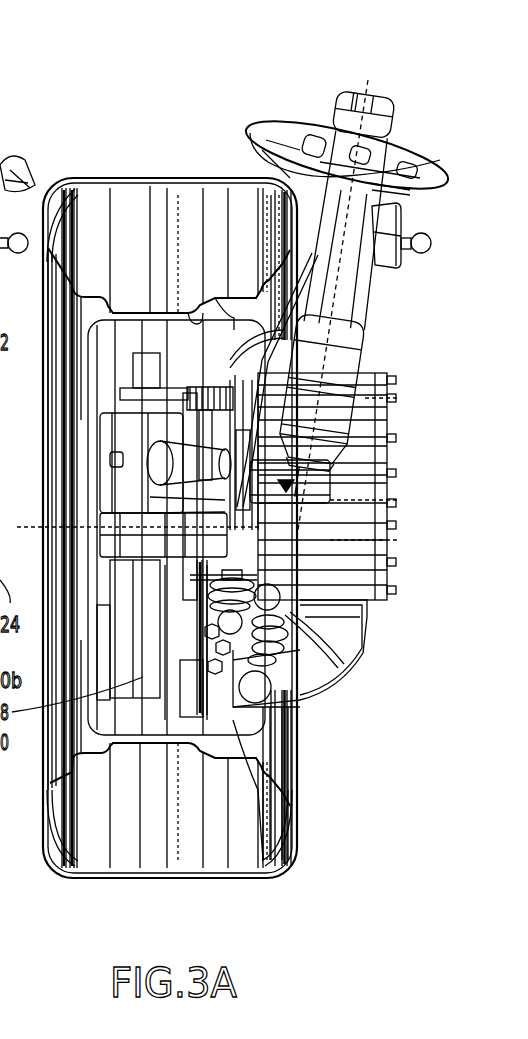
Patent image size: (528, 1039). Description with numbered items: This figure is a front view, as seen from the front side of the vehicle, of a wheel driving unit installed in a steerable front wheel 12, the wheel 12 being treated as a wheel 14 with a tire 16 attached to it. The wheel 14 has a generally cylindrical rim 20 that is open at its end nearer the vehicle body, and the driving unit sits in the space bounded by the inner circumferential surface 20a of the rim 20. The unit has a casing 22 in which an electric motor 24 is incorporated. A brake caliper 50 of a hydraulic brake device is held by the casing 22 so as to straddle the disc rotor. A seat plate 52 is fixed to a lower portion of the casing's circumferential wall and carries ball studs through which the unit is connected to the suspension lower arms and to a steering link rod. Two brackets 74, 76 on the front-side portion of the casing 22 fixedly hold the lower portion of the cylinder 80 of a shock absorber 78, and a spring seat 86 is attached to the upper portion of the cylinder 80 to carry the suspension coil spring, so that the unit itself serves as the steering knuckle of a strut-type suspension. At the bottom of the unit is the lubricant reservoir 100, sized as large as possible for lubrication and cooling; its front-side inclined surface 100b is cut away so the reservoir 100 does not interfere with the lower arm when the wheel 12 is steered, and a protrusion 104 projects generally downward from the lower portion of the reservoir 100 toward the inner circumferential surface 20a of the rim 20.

The wheel 12 is at (85, 128).
The wheel 14 is at (152, 282).
The tire 16 is at (60, 183).
The rim 20 is at (182, 307).
The inner circumferential surface 20a is at (204, 307).
The casing 22 is at (356, 402).
The electric motor 24 is at (360, 521).
The brake caliper 50 is at (90, 403).
The seat plate 52 is at (300, 638).
The bracket 74 is at (352, 334).
The bracket 76 is at (313, 472).
The shock absorber 78 is at (385, 228).
The cylinder 80 is at (348, 278).
The spring seat 86 is at (417, 162).
The lubricant reservoir 100 is at (333, 699).
The front-side inclined surface 100b is at (345, 640).
The protrusion 104 is at (288, 750).